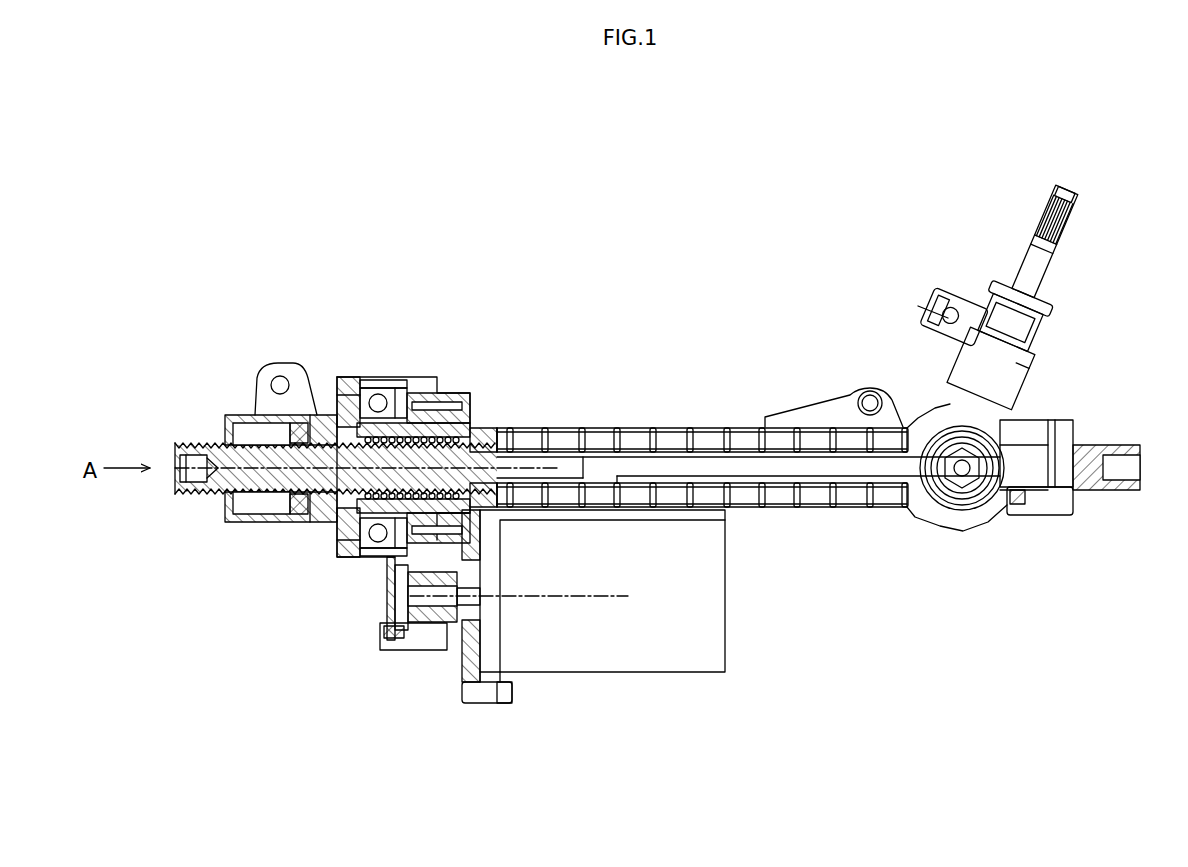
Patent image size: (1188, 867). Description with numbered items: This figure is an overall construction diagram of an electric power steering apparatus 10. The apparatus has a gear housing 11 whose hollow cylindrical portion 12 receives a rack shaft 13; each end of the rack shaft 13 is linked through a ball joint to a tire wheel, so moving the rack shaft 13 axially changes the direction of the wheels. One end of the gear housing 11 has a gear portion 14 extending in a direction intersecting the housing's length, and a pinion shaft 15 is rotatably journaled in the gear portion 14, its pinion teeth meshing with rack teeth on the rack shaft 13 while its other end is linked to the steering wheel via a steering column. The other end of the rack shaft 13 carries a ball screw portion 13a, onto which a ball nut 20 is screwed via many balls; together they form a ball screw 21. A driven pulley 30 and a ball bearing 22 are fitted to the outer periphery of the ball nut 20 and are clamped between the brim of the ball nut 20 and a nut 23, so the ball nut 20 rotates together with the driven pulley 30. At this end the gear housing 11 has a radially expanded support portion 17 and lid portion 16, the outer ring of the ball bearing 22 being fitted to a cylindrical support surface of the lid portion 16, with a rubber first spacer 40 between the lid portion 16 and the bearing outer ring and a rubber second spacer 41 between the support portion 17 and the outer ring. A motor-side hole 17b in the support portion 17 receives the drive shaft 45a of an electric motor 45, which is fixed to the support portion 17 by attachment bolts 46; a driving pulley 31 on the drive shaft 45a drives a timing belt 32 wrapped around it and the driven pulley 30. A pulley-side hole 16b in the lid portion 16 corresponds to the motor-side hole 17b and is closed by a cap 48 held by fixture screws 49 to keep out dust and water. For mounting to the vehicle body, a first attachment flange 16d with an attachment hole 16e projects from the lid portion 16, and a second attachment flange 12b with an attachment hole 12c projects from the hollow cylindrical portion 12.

The electric power steering apparatus 10 is at (777, 410).
The gear housing 11 is at (620, 428).
The hollow cylindrical portion 12 is at (490, 427).
The second attachment flange 12b is at (860, 390).
The attachment hole 12c is at (878, 396).
The rack shaft 13 is at (1105, 442).
The ball screw portion 13a is at (178, 440).
The gear portion 14 is at (940, 385).
The pinion shaft 15 is at (1058, 250).
The lid portion 16 is at (275, 527).
The pulley-side hole 16b is at (375, 557).
The first attachment flange 16d is at (278, 372).
The attachment hole 16e is at (268, 387).
The support portion 17 is at (442, 390).
The motor-side hole 17b is at (467, 632).
The ball nut 20 is at (385, 600).
The ball screw 21 is at (468, 432).
The ball bearing 22 is at (378, 378).
The nut 23 is at (345, 397).
The driven pulley 30 is at (432, 398).
The driving pulley 31 is at (405, 618).
The timing belt 32 is at (423, 637).
The first spacer 40 is at (343, 545).
The second spacer 41 is at (400, 386).
The electric motor 45 is at (612, 674).
The drive shaft 45a is at (432, 628).
The attachment bolts 46 is at (505, 703).
The cap 48 is at (380, 612).
The fixture screws 49 is at (383, 640).